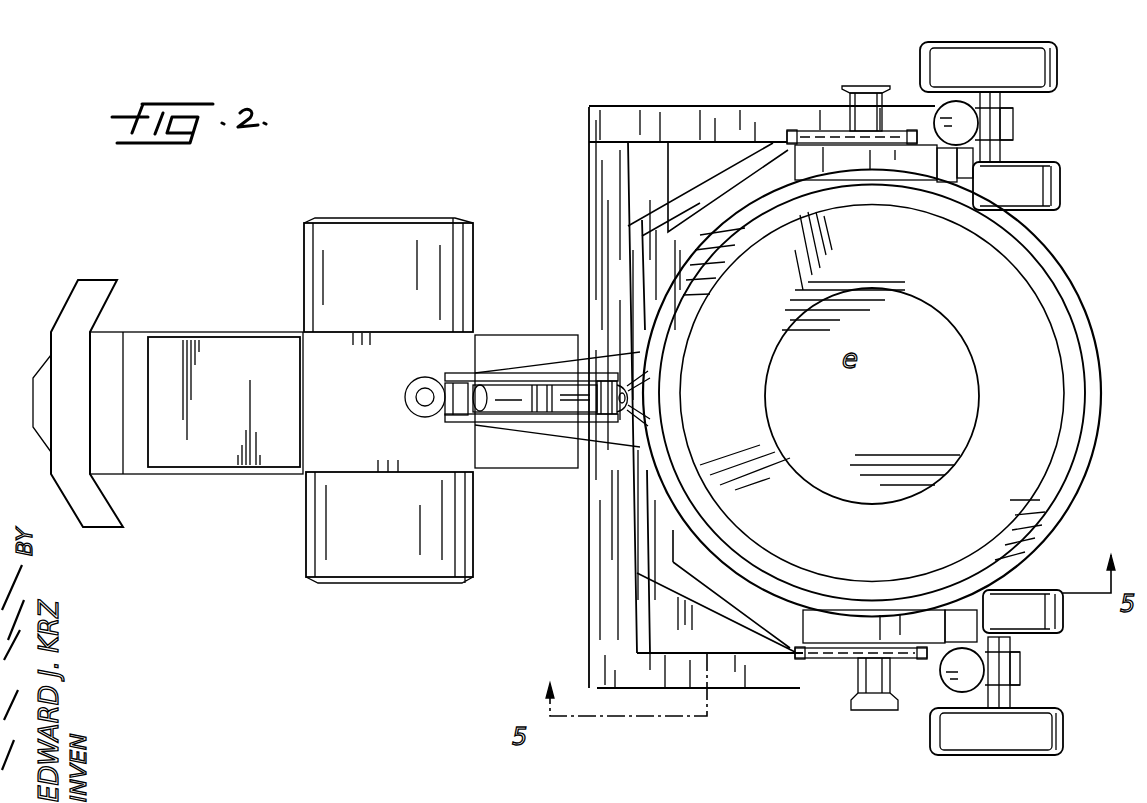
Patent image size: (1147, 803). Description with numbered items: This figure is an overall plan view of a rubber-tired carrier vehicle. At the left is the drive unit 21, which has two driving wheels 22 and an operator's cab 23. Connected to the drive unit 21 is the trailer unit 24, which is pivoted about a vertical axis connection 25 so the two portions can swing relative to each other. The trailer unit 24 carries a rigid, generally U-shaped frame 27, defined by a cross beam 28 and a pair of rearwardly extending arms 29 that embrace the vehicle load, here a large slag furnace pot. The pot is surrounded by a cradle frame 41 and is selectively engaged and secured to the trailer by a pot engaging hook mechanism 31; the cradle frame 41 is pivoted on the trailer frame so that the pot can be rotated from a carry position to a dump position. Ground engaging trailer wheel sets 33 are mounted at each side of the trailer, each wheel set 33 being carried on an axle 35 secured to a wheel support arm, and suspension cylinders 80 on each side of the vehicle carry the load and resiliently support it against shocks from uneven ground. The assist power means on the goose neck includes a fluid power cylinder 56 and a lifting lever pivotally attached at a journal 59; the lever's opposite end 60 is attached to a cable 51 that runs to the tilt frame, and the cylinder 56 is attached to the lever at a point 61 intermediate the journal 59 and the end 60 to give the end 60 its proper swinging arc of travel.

The drive unit 21 is at (168, 388).
The driving wheels 22 is at (378, 203).
The operator's cab 23 is at (195, 460).
The trailer unit 24 is at (735, 359).
The vertical axis connection 25 is at (512, 399).
The frame 27 is at (618, 122).
The cross beam 28 is at (605, 268).
The rearwardly extending arms 29 is at (708, 125).
The pot engaging hook mechanism 31 is at (800, 134).
The trailer wheel sets 33 is at (1055, 45).
The axle 35 is at (1012, 152).
The cradle frame 41 is at (748, 180).
The cable 51 is at (636, 430).
The fluid power cylinder 56 is at (500, 390).
The journal 59 is at (456, 408).
The opposite end of lifting lever 60 is at (608, 395).
The intermediate attachment point 61 is at (525, 415).
The suspension cylinders 80 is at (962, 118).